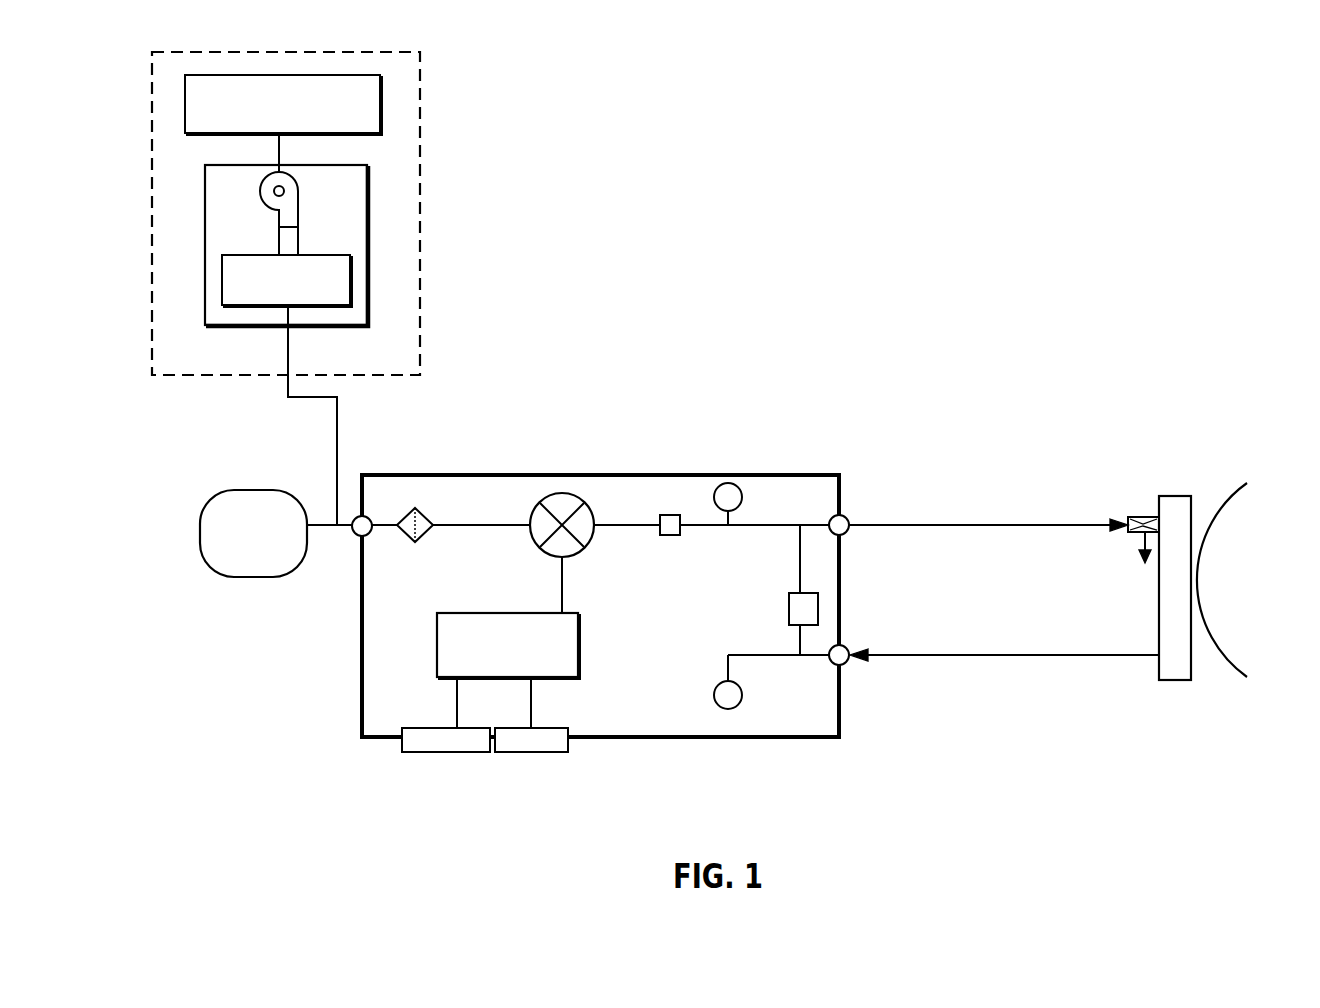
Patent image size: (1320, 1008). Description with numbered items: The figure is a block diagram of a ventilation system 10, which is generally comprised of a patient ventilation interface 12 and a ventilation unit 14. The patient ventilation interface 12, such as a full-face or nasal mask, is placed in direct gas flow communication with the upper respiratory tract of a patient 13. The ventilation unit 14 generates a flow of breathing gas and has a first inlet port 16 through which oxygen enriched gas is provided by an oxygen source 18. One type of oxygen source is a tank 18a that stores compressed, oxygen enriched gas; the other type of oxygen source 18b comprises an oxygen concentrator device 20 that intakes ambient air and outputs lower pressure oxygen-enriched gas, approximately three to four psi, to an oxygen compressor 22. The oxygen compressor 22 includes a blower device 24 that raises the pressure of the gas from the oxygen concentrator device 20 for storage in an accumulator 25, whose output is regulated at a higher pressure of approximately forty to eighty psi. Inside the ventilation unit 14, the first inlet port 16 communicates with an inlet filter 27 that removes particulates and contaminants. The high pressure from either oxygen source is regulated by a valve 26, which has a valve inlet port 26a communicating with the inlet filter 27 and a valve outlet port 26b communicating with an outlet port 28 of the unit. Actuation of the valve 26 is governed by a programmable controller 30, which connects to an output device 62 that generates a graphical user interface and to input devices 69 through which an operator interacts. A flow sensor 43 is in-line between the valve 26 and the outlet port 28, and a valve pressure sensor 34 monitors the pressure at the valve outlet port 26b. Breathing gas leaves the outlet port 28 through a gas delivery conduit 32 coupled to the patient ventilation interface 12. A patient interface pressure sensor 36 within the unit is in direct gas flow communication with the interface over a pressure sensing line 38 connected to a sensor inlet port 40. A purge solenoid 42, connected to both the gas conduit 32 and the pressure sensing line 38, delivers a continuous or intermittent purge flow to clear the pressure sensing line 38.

The ventilation system 10 is at (717, 413).
The patient ventilation interface 12 is at (1142, 628).
The patient 13 is at (1240, 580).
The ventilation unit 14 is at (584, 742).
The first inlet port 16 is at (357, 536).
The oxygen source 18 is at (309, 323).
The tank 18a is at (251, 577).
The oxygen source 18b is at (388, 378).
The oxygen concentrator device 20 is at (380, 96).
The oxygen compressor 22 is at (205, 229).
The blower device 24 is at (300, 208).
The accumulator 25 is at (222, 282).
The valve 26 is at (562, 493).
The valve inlet port 26a is at (531, 522).
The valve outlet port 26b is at (595, 521).
The inlet filter 27 is at (415, 543).
The outlet port 28 is at (850, 518).
The programmable controller 30 is at (580, 632).
The gas delivery conduit 32 is at (904, 521).
The valve pressure sensor 34 is at (743, 497).
The patient interface pressure sensor 36 is at (743, 695).
The pressure sensing line 38 is at (918, 652).
The sensor inlet port 40 is at (850, 648).
The purge solenoid 42 is at (750, 590).
The flow sensor 43 is at (666, 515).
The output device 62 is at (457, 752).
The input devices 69 is at (531, 752).